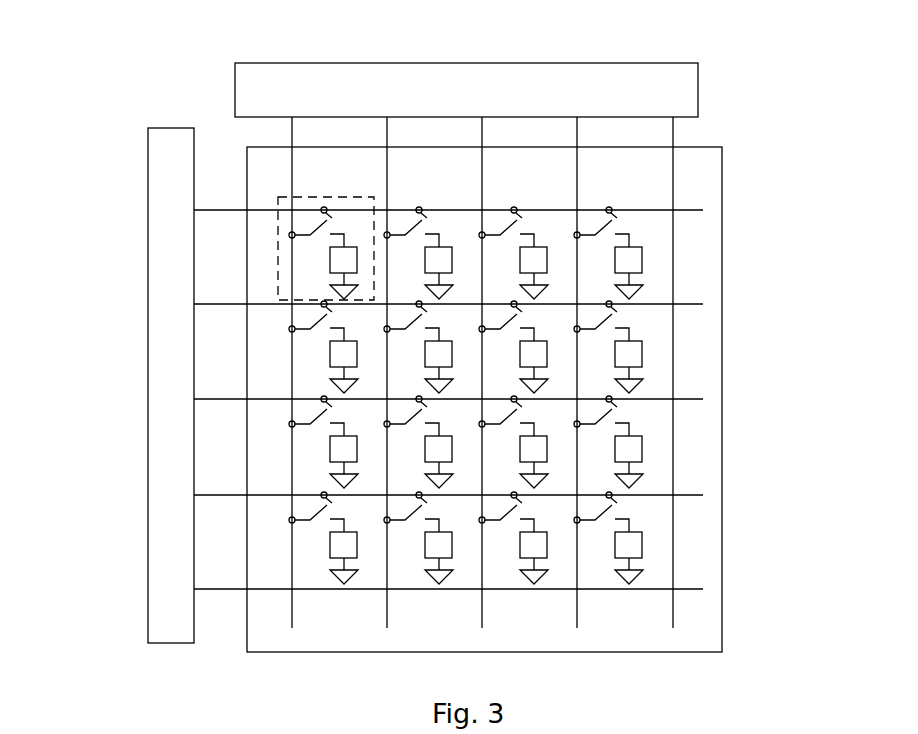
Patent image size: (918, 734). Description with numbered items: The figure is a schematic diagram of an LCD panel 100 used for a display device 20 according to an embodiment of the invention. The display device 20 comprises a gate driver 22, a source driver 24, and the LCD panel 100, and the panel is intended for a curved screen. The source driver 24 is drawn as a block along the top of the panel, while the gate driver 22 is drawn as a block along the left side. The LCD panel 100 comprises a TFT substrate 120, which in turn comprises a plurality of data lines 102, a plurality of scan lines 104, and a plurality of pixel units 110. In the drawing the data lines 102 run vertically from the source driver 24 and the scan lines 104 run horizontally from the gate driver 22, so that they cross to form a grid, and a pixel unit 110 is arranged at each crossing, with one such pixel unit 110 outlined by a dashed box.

The display device 20 is at (451, 51).
The gate driver 22 is at (148, 268).
The source driver 24 is at (698, 87).
The LCD panel 100 is at (756, 212).
The data lines 102 is at (292, 141).
The scan lines 104 is at (237, 592).
The pixel units 110 is at (327, 197).
The TFT substrate 120 is at (722, 446).